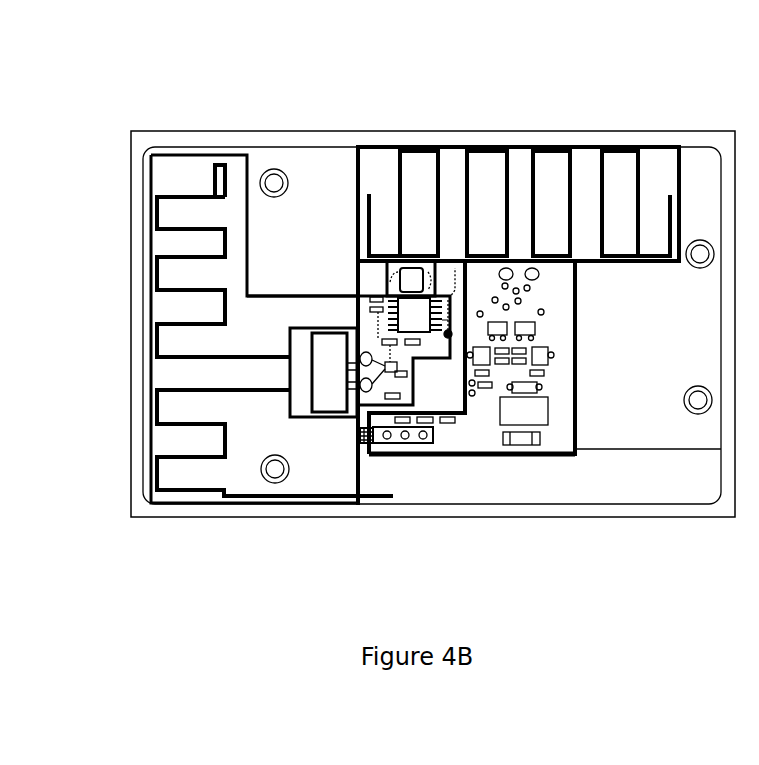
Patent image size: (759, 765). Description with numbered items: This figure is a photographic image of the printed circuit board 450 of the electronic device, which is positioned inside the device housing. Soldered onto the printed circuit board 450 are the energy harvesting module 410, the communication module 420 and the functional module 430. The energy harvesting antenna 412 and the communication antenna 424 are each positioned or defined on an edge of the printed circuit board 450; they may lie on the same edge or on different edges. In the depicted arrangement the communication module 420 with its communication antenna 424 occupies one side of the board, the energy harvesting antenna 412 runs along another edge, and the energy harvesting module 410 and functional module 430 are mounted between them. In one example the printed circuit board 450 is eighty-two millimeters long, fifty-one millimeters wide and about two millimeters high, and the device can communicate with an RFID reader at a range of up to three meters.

The printed circuit board 450 is at (320, 172).
The energy harvesting antenna 412 is at (621, 147).
The communication module 420 is at (151, 202).
The communication antenna 424 is at (182, 453).
The functional module 430 is at (372, 276).
The energy harvesting module 410 is at (549, 460).